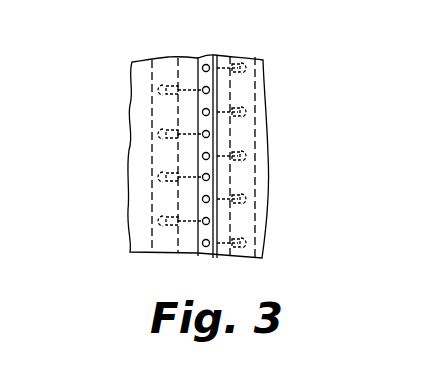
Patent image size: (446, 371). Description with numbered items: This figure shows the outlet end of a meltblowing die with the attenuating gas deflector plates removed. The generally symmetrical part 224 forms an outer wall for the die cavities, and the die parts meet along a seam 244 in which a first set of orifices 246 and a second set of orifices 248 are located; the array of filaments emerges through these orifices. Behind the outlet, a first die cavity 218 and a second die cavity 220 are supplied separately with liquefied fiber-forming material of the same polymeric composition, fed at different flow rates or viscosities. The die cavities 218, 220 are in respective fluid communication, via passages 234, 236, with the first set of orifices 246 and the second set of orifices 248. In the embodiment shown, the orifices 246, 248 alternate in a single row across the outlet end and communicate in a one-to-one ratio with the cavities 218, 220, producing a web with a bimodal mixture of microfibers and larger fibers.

The second generally symmetrical part 224 is at (262, 103).
The seam 244 is at (213, 80).
The first set of orifices 246 is at (207, 135).
The second set of orifices 248 is at (200, 157).
The first die cavity 218 is at (168, 198).
The second die cavity 220 is at (240, 212).
The passage 234 is at (180, 232).
The passage 236 is at (224, 258).